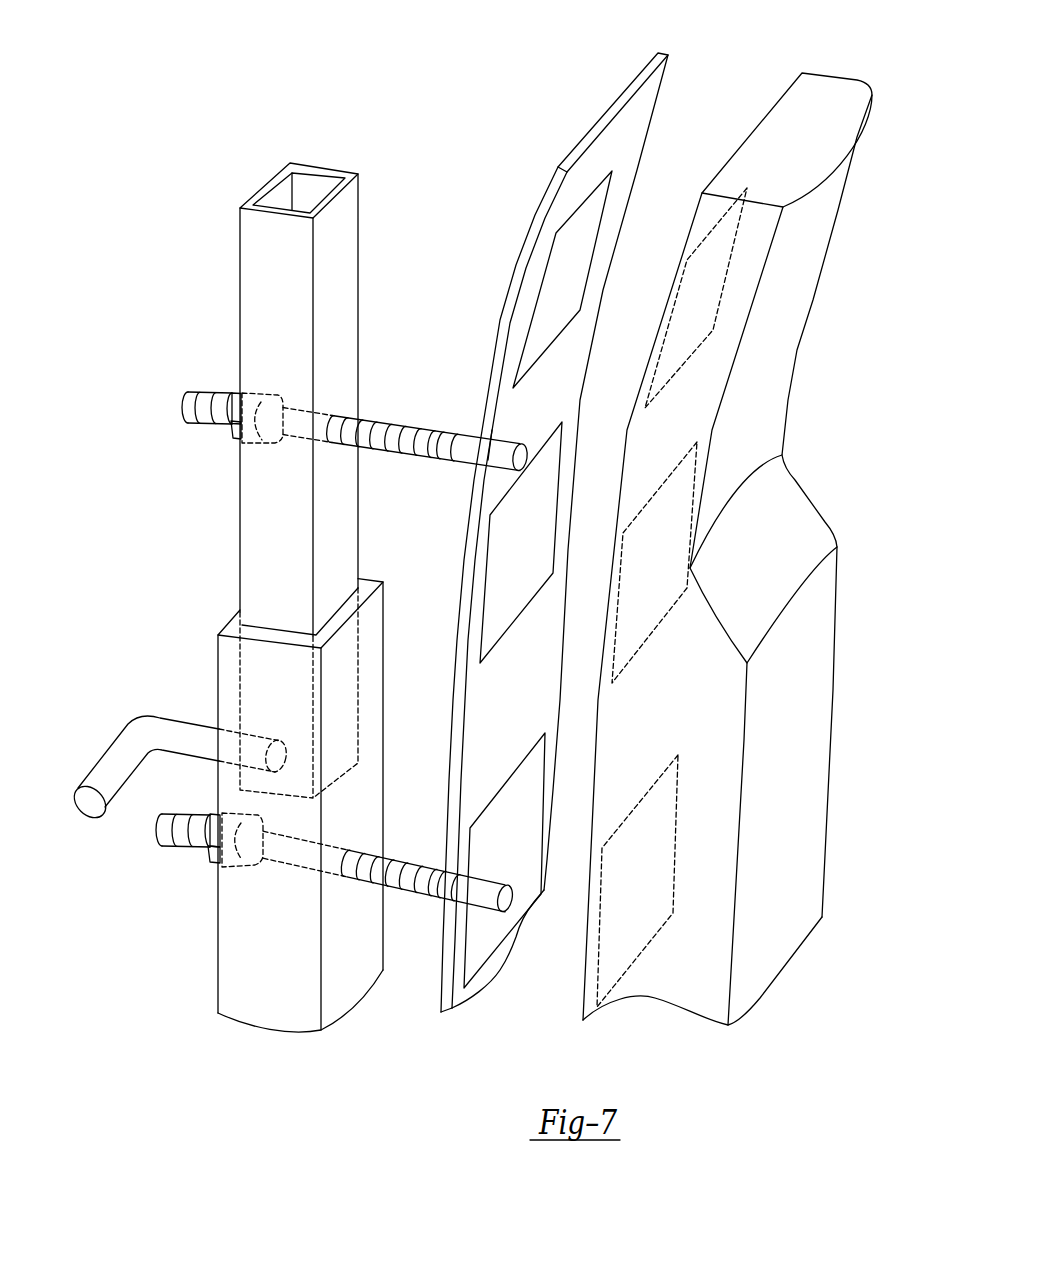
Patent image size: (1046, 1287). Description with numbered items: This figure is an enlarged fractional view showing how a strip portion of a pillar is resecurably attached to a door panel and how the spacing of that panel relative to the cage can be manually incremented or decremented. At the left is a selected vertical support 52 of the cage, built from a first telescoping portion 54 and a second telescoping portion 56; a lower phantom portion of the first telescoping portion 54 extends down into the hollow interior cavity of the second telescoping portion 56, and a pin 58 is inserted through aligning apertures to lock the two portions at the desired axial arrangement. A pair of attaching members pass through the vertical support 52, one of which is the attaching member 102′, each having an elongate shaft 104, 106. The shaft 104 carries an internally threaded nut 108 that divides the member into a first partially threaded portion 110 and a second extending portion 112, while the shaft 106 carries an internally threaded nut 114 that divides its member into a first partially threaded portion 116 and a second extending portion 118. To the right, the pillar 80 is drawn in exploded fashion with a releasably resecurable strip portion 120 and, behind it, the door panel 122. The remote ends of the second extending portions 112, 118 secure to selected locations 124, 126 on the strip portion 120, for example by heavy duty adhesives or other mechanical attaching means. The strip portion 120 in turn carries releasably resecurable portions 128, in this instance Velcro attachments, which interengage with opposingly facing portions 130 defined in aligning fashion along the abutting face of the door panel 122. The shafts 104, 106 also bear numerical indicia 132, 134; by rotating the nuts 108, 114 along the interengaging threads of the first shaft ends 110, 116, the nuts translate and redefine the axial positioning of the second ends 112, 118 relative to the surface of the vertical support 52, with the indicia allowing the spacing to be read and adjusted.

The vertical support 52 is at (162, 606).
The first telescoping portion 54 is at (253, 508).
The second telescoping portion 56 is at (232, 957).
The pin 58 is at (148, 715).
The pillar 80 is at (703, 92).
The attaching member 102′ is at (182, 392).
The elongate shaft 104 is at (346, 892).
The elongate shaft 106 is at (332, 408).
The internally threaded nut 108 is at (212, 860).
The first partially threaded portion 110 is at (188, 816).
The second extending portion 112 is at (370, 848).
The internally threaded nut 114 is at (232, 430).
The first partially threaded portion 116 is at (222, 397).
The second extending portion 118 is at (408, 450).
The strip portion 120 is at (511, 288).
The door panel 122 is at (780, 345).
The selected location 124 is at (473, 943).
The selected location 126 is at (498, 440).
The releasably resecurable portions 128 is at (573, 290).
The opposingly facing portions 130 is at (677, 330).
The numerical indicia 132 is at (415, 863).
The numerical indicia 134 is at (403, 452).